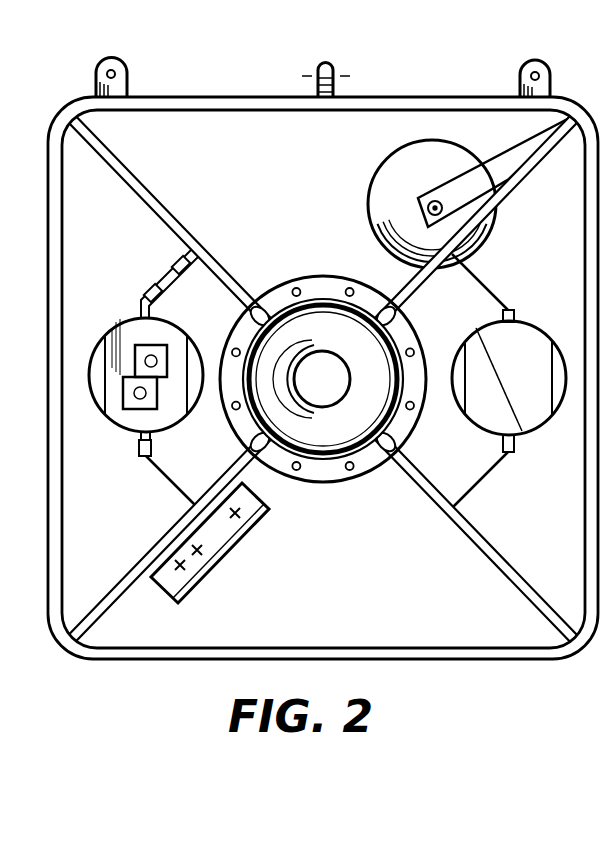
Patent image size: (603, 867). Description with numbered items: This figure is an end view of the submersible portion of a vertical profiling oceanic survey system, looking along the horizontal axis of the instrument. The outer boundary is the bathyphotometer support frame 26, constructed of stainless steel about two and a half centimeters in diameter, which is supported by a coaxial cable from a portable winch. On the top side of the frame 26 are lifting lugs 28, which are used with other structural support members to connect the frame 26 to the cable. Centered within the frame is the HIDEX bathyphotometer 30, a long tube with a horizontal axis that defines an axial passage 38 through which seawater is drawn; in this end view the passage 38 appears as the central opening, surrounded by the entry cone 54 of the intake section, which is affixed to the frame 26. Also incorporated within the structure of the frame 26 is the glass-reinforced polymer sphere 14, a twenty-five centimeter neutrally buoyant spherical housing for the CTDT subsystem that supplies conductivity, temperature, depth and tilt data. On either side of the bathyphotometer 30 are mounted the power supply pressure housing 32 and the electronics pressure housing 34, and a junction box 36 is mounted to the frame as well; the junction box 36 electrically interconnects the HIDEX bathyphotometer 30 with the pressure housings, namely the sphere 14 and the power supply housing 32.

The glass-reinforced polymer sphere 14 is at (397, 159).
The bathyphotometer support frame 26 is at (435, 97).
The lifting lugs 28 is at (125, 58).
The HIDEX bathyphotometer 30 is at (375, 513).
The power supply pressure housing 32 is at (530, 337).
The electronics pressure housing 34 is at (133, 418).
The junction box 36 is at (218, 532).
The axial passage 38 is at (310, 367).
The entry cone 54 is at (330, 442).